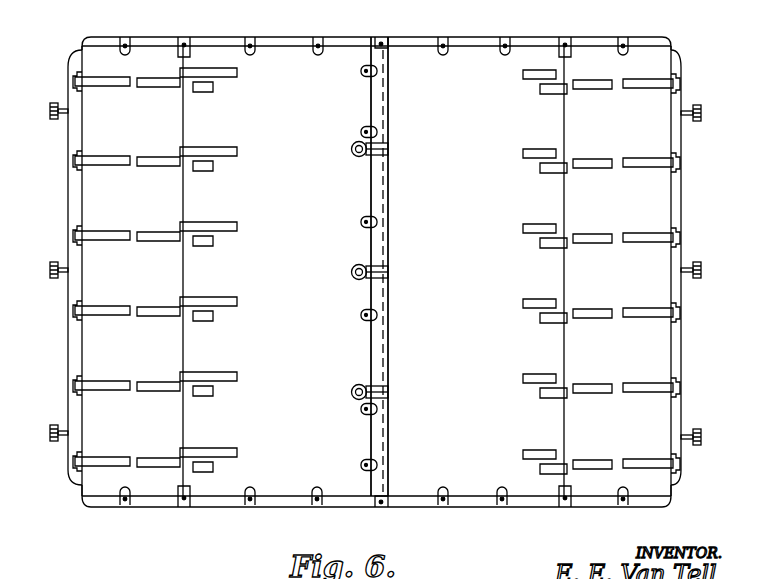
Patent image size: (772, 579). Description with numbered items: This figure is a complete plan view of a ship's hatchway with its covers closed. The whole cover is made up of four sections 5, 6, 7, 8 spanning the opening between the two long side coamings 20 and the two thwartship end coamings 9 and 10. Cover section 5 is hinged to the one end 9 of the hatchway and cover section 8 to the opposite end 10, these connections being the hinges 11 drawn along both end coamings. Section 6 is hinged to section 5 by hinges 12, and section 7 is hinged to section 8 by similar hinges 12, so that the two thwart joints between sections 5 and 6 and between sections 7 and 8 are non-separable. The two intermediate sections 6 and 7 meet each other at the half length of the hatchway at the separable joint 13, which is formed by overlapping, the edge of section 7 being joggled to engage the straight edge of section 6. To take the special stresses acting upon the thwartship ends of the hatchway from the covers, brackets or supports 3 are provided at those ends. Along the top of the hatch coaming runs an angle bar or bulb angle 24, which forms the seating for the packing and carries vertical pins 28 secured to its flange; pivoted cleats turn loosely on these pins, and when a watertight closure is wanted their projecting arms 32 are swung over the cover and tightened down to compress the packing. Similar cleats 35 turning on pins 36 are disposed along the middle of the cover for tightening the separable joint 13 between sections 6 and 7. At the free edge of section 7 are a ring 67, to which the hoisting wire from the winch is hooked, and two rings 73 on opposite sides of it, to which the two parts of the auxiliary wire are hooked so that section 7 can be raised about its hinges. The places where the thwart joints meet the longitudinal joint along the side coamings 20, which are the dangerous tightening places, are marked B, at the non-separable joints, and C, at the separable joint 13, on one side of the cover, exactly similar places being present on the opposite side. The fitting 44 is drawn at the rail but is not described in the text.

The brackets or supports 3 is at (65, 433).
The cover section 5 is at (98, 57).
The cover section 6 is at (283, 63).
The cover section 7 is at (517, 58).
The cover section 8 is at (578, 60).
The end of hatchway 9 is at (82, 176).
The opposite end of hatchway 10 is at (687, 200).
The hinges 11 is at (682, 78).
The hinges 12 is at (122, 195).
The joint 13 is at (373, 438).
The side coamings 20 is at (517, 38).
The angle bar or bulb angle 24 is at (68, 65).
The pin 28 is at (124, 38).
The projecting arms 32 is at (130, 47).
The cleats 35 is at (370, 76).
The pins 36 is at (361, 72).
The rectangular hook 44 is at (190, 52).
The ring 67 is at (352, 268).
The ring 73 is at (352, 148).
The tightening place B is at (183, 500).
The tightening place C is at (380, 507).